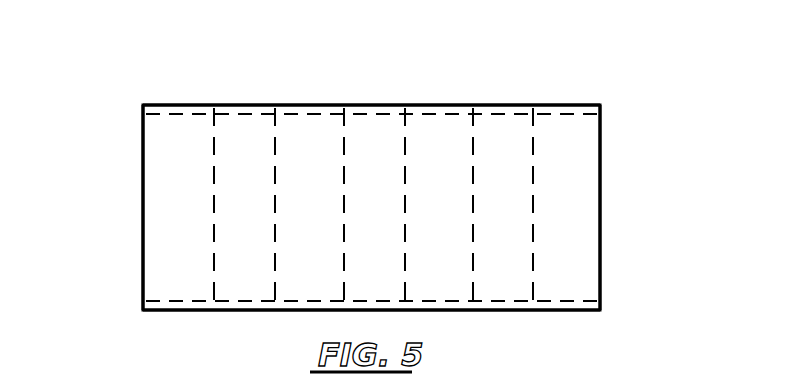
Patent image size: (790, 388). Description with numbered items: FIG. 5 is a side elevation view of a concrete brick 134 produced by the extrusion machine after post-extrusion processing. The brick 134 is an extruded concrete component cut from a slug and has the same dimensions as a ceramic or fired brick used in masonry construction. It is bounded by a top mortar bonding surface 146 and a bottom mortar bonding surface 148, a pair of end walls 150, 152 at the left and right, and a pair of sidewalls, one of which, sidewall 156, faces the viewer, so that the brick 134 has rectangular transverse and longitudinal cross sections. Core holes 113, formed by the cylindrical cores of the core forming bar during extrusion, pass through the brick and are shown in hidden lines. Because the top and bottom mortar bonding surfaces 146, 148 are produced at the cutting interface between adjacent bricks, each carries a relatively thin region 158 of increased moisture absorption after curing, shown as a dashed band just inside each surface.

The core holes 113 is at (214, 145).
The concrete brick 134 is at (616, 121).
The top mortar bonding surface 146 is at (437, 105).
The bottom mortar bonding surface 148 is at (198, 310).
The end wall 150 is at (600, 207).
The end wall 152 is at (143, 155).
The sidewall 156 is at (157, 200).
The moisture absorption region 158 is at (565, 105).